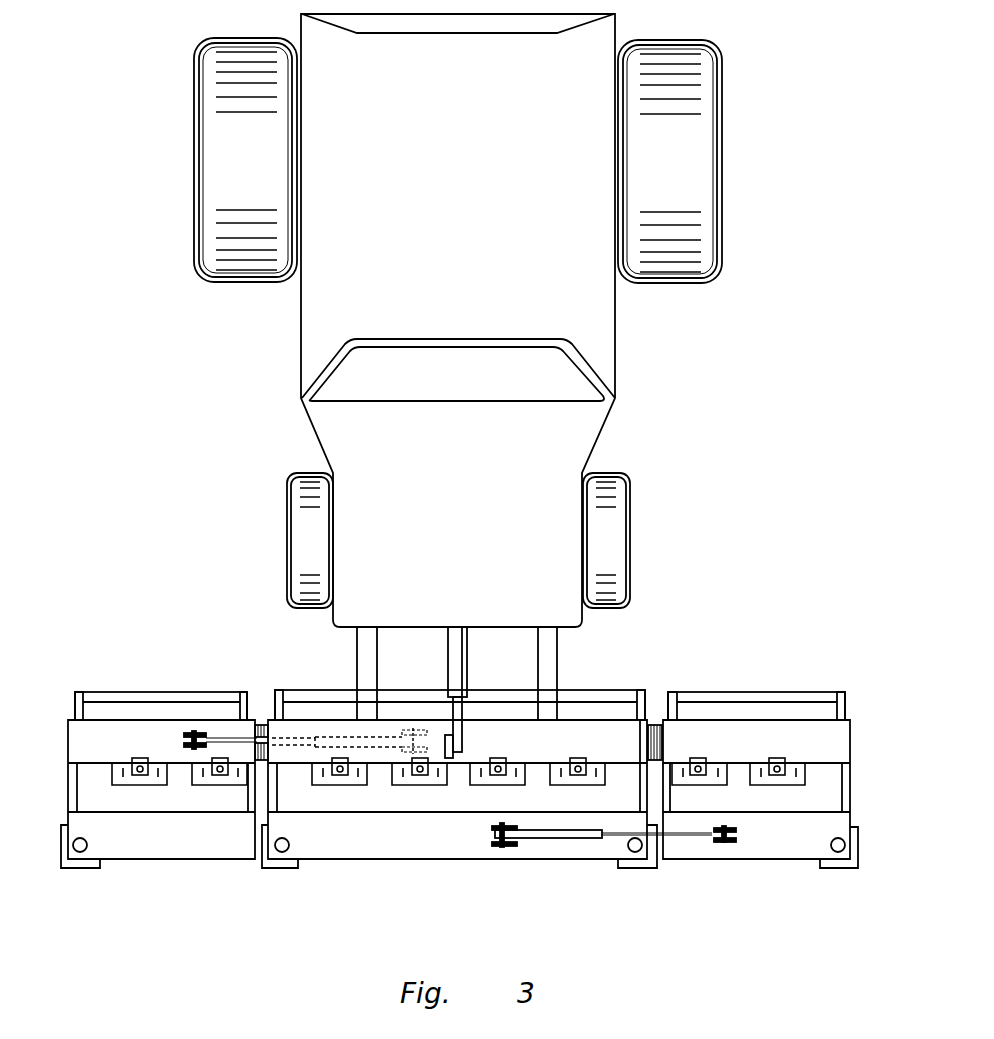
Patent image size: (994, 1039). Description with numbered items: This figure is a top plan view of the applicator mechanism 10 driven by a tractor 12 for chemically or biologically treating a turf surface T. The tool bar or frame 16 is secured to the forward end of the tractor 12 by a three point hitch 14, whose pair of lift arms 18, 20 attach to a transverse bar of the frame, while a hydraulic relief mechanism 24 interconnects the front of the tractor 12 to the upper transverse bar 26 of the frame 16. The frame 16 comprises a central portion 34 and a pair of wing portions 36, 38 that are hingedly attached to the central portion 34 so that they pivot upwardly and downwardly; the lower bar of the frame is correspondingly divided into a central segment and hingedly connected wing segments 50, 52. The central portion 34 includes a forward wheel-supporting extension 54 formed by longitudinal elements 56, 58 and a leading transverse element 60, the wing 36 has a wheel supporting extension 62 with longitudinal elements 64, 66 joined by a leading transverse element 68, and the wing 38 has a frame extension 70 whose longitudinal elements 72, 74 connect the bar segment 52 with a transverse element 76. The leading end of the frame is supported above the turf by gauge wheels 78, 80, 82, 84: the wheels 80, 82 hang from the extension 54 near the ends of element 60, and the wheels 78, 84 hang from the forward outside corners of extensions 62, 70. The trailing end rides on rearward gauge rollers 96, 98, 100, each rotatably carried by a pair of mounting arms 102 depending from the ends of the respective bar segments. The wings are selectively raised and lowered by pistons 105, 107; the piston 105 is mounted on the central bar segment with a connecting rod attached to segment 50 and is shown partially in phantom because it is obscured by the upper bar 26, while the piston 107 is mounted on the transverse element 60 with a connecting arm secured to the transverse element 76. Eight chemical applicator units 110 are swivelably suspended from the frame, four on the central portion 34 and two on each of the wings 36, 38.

The turf surface T is at (770, 430).
The applicator mechanism 10 is at (868, 730).
The tractor 12 is at (628, 328).
The three point hitch 14 is at (585, 650).
The tool bar or frame 16 is at (263, 730).
The lift arm 18 is at (380, 643).
The lift arm 20 is at (560, 643).
The hydraulic relief mechanism 24 is at (468, 660).
The upper transverse bar 26 is at (640, 725).
The central portion 34 is at (370, 859).
The wing portion 36 is at (165, 860).
The wing portion 38 is at (778, 859).
The wing segment 50 is at (108, 740).
The wing segment 52 is at (765, 740).
The forward wheel-supporting extension 54 is at (503, 859).
The longitudinal element 56 is at (640, 787).
The longitudinal element 58 is at (280, 793).
The leading transverse element 60 is at (437, 859).
The wheel supporting extension 62 is at (120, 860).
The longitudinal element 64 is at (68, 795).
The longitudinal element 66 is at (233, 798).
The leading transverse element 68 is at (213, 860).
The frame extension 70 is at (723, 859).
The longitudinal element 72 is at (673, 797).
The longitudinal element 74 is at (850, 773).
The transverse element 76 is at (808, 859).
The gauge wheel 78 is at (78, 868).
The gauge wheel 80 is at (290, 868).
The gauge wheel 82 is at (643, 868).
The gauge wheel 84 is at (868, 853).
The gauge roller 96 is at (130, 692).
The gauge roller 98 is at (405, 690).
The gauge roller 100 is at (755, 692).
The mounting arm 102 is at (278, 688).
The piston 105 is at (227, 737).
The piston 107 is at (578, 838).
The chemical applicator unit 110 is at (560, 798).